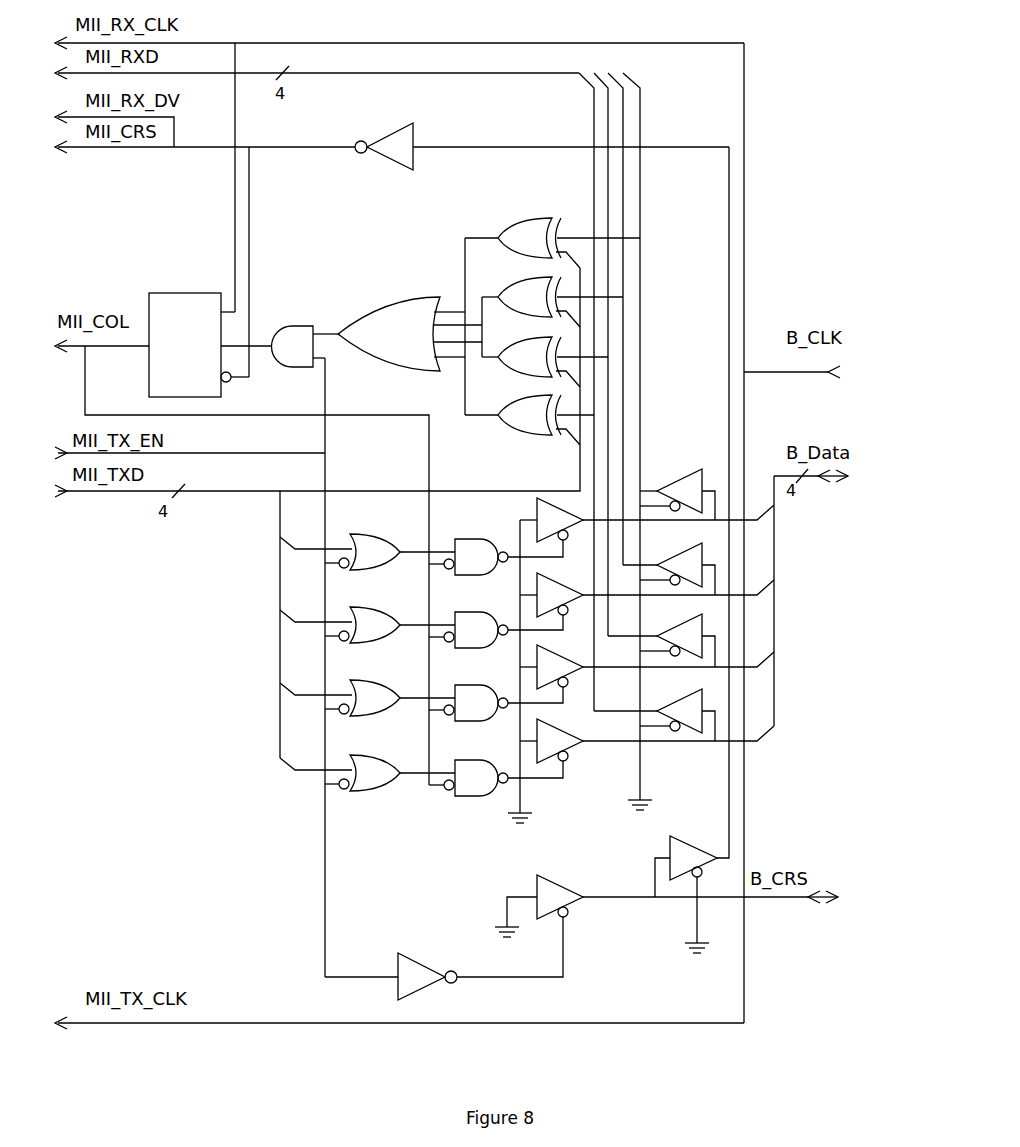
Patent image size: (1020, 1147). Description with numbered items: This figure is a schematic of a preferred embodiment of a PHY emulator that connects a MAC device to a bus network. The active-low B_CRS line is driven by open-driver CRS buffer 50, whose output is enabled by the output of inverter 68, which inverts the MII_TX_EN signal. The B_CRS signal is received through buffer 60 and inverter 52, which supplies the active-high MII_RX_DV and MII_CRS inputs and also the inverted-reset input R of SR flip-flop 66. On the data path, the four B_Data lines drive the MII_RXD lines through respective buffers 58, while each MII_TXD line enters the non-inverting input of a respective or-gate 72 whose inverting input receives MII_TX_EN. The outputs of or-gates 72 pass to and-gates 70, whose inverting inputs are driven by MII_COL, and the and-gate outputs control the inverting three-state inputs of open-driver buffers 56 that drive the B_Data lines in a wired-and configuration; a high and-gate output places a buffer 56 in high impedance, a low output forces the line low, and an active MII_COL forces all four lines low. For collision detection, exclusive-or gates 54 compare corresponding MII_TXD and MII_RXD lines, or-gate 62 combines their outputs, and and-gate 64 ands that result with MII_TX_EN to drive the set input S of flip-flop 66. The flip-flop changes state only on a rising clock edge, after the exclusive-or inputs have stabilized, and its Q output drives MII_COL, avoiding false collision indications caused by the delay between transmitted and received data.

The open-driver CRS buffer 50 is at (632, 926).
The inverter 52 is at (410, 156).
The exclusive-or gates 54 is at (541, 247).
The open-driver three-state buffers 56 is at (565, 529).
The buffers 58 is at (698, 500).
The buffer 60 is at (696, 868).
The or-gate 62 is at (413, 343).
The and-gate 64 is at (301, 355).
The SR flip-flop 66 is at (180, 391).
The inverter 68 is at (425, 986).
The and-gates 70 is at (484, 566).
The or-gates 72 is at (385, 561).